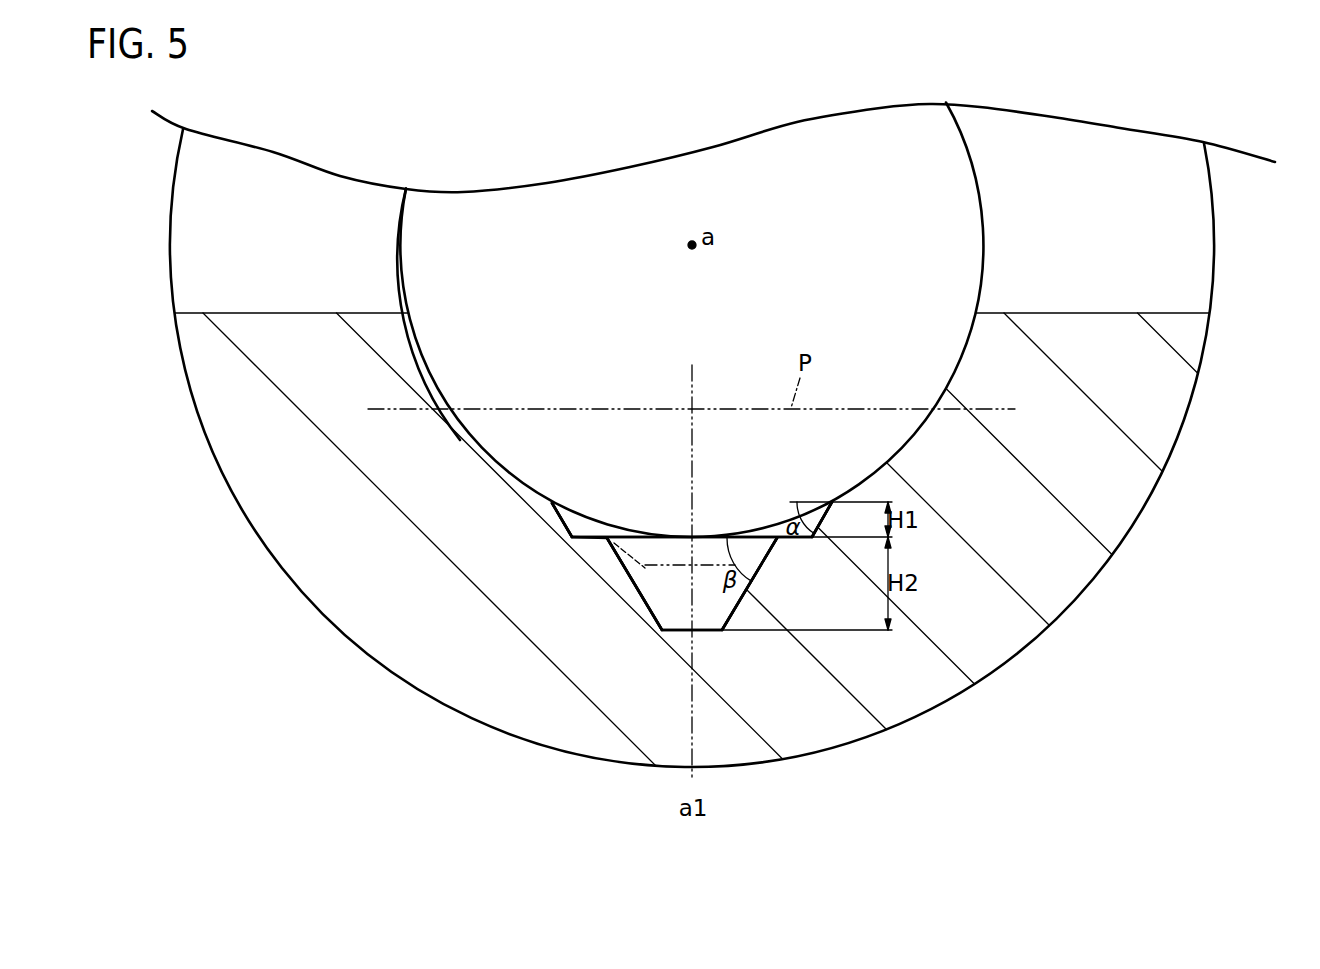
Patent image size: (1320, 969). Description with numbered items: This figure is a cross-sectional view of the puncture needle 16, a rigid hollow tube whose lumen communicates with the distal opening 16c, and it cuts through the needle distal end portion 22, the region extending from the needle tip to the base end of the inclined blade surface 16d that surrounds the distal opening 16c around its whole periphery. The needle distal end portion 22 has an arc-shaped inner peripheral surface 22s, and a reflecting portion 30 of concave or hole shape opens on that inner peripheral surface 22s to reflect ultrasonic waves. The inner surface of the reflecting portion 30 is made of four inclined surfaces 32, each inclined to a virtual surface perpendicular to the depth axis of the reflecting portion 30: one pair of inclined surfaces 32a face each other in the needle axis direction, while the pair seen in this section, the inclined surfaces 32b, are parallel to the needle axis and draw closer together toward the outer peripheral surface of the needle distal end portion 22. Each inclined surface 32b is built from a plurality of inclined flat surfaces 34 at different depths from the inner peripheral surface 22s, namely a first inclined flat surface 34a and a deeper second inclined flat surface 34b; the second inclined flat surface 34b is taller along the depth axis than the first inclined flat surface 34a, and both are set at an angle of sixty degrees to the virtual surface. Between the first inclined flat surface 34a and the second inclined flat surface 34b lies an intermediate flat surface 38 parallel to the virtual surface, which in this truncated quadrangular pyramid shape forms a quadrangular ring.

The puncture needle 16 is at (513, 79).
The distal opening 16c is at (975, 188).
The blade surface 16d is at (1175, 243).
The needle distal end portion 22 is at (1085, 595).
The inner peripheral surface 22s is at (422, 338).
The reflecting portion 30 is at (752, 515).
The inclined surface 32 is at (635, 560).
The inclined surface 32a is at (735, 542).
The inclined surface 32b is at (627, 495).
The inclined flat surface 34 is at (566, 519).
The first inclined flat surface 34a is at (576, 492).
The second inclined flat surface 34b is at (741, 577).
The intermediate flat surface 38 is at (592, 535).